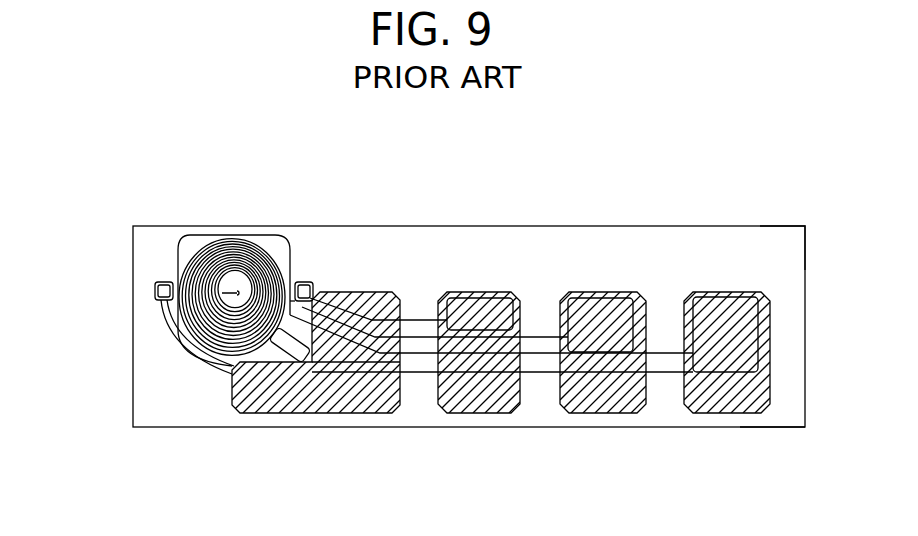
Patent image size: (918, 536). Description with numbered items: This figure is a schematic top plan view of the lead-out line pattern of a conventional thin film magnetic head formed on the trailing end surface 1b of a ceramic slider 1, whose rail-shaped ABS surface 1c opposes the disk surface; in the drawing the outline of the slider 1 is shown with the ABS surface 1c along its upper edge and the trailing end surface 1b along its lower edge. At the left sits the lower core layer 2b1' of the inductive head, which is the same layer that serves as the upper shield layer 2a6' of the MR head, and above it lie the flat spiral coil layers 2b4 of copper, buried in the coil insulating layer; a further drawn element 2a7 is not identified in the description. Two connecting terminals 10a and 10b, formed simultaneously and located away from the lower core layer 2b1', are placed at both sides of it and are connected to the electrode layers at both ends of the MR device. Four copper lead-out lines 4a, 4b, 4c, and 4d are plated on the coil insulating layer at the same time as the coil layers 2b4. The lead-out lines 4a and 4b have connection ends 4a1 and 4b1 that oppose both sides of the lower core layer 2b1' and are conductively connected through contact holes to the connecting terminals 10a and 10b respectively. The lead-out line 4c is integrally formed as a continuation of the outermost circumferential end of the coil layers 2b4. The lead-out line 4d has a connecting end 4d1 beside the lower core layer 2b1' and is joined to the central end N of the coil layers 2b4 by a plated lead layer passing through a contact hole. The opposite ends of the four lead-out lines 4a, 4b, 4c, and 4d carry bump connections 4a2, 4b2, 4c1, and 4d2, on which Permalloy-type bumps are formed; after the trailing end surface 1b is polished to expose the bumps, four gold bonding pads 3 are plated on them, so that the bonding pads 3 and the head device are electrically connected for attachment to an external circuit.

The slider 1 is at (692, 170).
The trailing end surface 1b is at (790, 415).
The ABS surface 1c is at (769, 221).
The upper shield layer 2a6' is at (186, 252).
The lower core layer 2b1' is at (202, 266).
The flat spiral coil layers 2b4 is at (242, 240).
The coil lead 2a7 is at (205, 312).
The central end N is at (237, 295).
The lead-out line 4a is at (190, 352).
The connection end 4a1 is at (175, 327).
The bump connection 4a2 is at (295, 398).
The lead-out line 4b is at (412, 320).
The connection end 4b1 is at (302, 282).
The bump connection 4b2 is at (478, 298).
The lead-out line 4c is at (538, 337).
The bump connection 4c1 is at (604, 298).
The lead-out line 4d is at (658, 352).
The connecting end 4d1 is at (256, 406).
The bump connection 4d2 is at (733, 297).
The connecting terminal 10a is at (155, 290).
The connecting terminal 10b is at (316, 288).
The bonding pads 3 is at (364, 400).